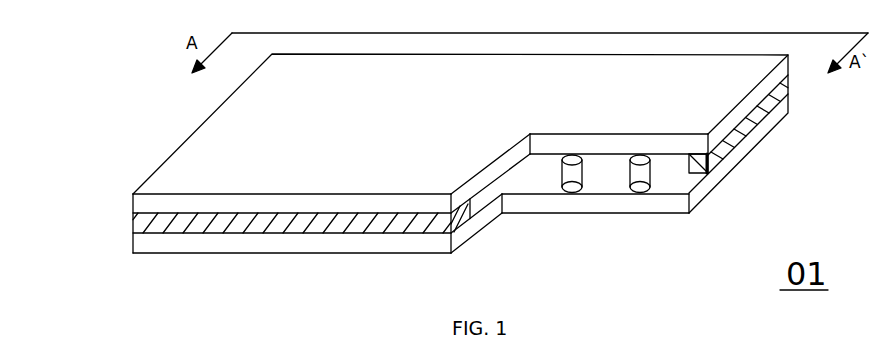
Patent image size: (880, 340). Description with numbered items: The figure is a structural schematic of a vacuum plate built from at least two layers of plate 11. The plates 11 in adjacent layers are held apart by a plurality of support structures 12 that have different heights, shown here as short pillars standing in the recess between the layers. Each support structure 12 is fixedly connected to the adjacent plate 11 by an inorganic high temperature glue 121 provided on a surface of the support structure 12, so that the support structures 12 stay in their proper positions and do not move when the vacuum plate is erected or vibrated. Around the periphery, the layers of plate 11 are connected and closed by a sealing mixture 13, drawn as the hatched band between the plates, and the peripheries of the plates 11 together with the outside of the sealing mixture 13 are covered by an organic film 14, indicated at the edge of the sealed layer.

The plate 11 is at (149, 203).
The support structure 12 is at (634, 175).
The inorganic high temperature glue 121 is at (570, 161).
The sealing mixture 13 is at (332, 223).
The organic film 14 is at (706, 167).